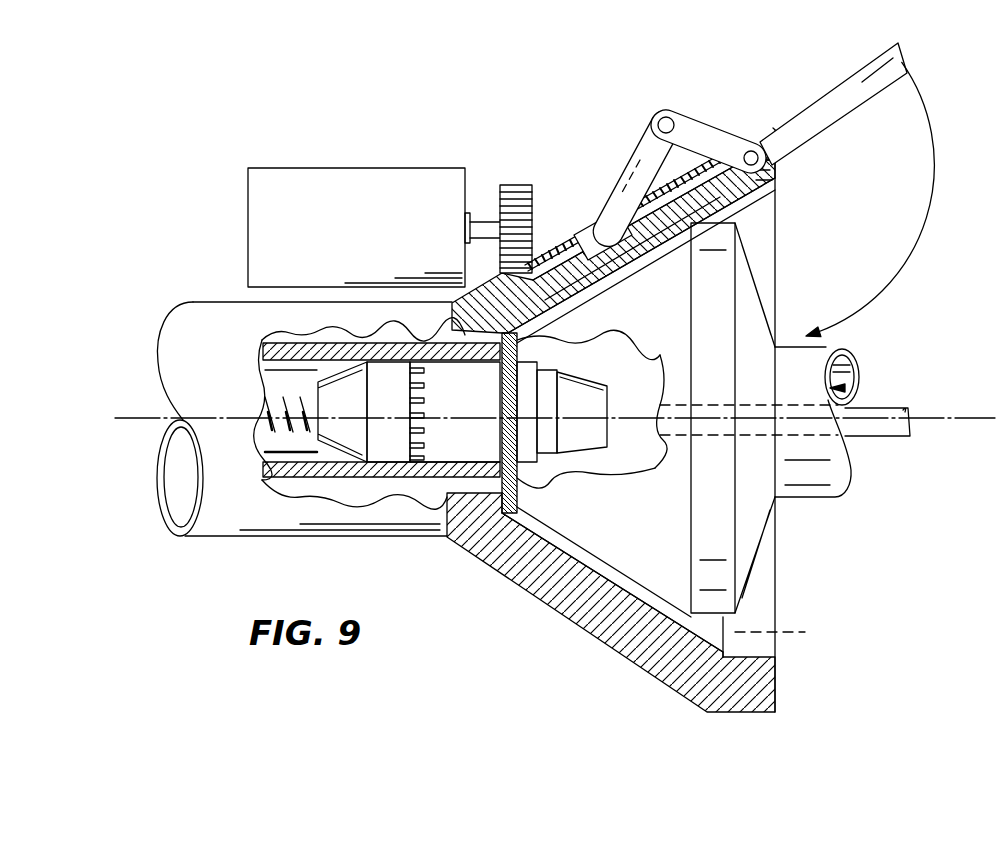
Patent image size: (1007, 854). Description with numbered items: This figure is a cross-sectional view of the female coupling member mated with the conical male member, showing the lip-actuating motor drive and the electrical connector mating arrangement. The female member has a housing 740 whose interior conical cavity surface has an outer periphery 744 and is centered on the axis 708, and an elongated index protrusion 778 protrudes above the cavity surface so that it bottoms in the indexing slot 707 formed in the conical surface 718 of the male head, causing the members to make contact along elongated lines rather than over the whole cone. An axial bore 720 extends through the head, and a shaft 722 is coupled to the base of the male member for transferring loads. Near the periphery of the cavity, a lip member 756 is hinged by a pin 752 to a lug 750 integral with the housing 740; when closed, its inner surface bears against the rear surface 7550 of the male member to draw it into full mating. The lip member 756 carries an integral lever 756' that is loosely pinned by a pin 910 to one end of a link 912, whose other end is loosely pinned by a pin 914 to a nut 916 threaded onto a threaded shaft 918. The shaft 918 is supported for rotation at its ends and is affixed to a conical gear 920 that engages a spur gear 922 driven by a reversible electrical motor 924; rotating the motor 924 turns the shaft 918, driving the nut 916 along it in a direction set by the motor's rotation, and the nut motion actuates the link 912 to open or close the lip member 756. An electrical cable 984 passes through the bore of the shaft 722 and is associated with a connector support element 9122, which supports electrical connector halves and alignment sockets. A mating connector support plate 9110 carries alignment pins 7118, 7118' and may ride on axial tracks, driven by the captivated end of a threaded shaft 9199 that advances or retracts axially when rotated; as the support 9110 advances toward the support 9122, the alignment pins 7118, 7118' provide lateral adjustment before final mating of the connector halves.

The reversible electrical motor 924 is at (374, 168).
The spur gear 922 is at (510, 185).
The threaded shaft 918 is at (553, 258).
The nut 916 is at (587, 217).
The link 912 is at (642, 153).
The pin 910 is at (666, 116).
The integral lever 756' is at (708, 126).
The lip member 756 is at (847, 190).
The pin 752 is at (760, 157).
The lug 750 is at (772, 176).
The outer periphery 744 is at (778, 222).
The rear surface 7550 is at (762, 292).
The pin 914 is at (617, 246).
The conical gear 920 is at (577, 300).
The surface 718 is at (674, 322).
The shaft 722 is at (862, 362).
The axial bore 720 is at (848, 388).
The axis 708 is at (968, 426).
The electrical cable 984 is at (882, 440).
The connector support element 9122 is at (566, 378).
The alignment pin 7118 is at (447, 391).
The alignment pin 7118' is at (450, 442).
The connector support plate 9110 is at (332, 380).
The threaded shaft 9199 is at (326, 436).
The index protrusion 778 is at (540, 600).
The housing 740 is at (600, 640).
The indexing slot 707 is at (791, 631).